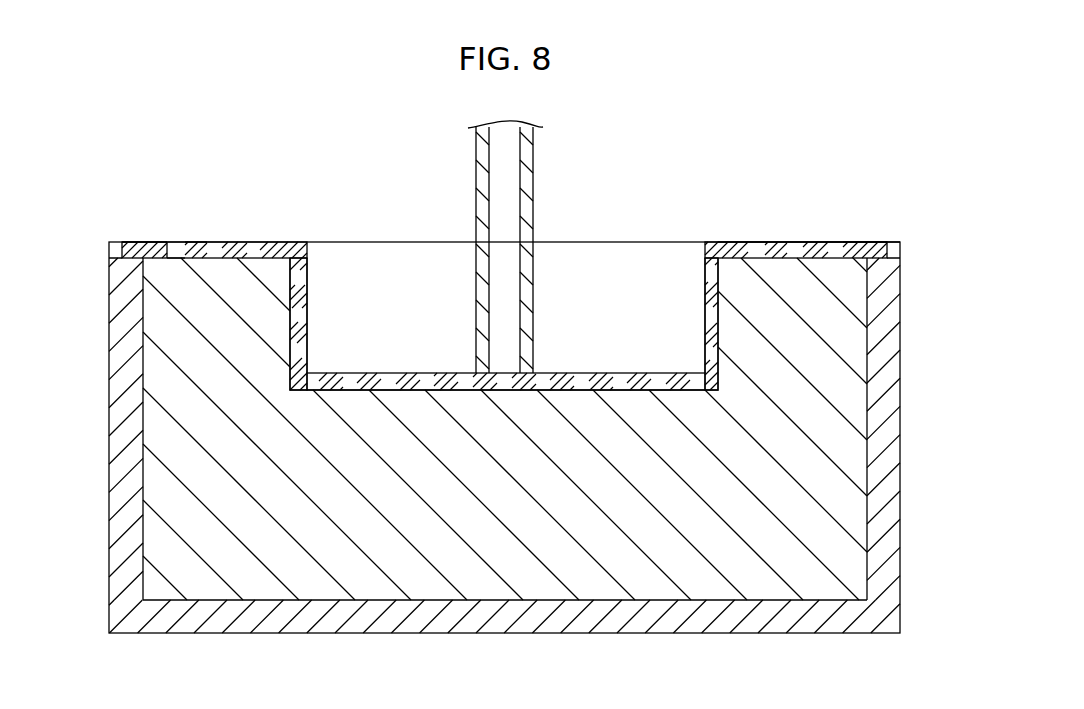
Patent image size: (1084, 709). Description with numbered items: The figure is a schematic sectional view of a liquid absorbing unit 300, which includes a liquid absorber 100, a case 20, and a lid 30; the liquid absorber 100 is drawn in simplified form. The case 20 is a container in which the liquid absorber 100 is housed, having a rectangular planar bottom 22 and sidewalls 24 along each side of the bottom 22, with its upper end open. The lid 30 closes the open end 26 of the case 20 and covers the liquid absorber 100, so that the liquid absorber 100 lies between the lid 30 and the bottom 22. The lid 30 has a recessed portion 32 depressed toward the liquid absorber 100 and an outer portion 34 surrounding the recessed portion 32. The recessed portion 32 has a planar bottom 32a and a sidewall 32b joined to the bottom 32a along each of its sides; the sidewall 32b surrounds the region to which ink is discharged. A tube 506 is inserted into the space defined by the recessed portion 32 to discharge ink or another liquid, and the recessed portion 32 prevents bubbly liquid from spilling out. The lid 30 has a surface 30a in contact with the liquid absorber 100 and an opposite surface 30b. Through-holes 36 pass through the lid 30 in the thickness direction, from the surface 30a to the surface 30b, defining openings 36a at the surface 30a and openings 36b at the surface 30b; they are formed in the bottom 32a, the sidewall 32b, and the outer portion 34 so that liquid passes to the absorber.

The liquid absorbing unit 300 is at (890, 192).
The liquid absorber 100 is at (180, 513).
The case 20 is at (118, 368).
The bottom 22 is at (522, 634).
The sidewalls 24 is at (118, 422).
The open end 26 is at (872, 242).
The lid 30 is at (712, 242).
The surface 30a is at (198, 262).
The surface 30b is at (194, 242).
The recessed portion 32 is at (672, 166).
The bottom 32a is at (597, 373).
The sidewall 32b is at (703, 295).
The outer portion 34 is at (775, 242).
The through-holes 36 is at (252, 242).
The openings 36a is at (193, 258).
The openings 36b is at (178, 242).
The tube 506 is at (478, 176).